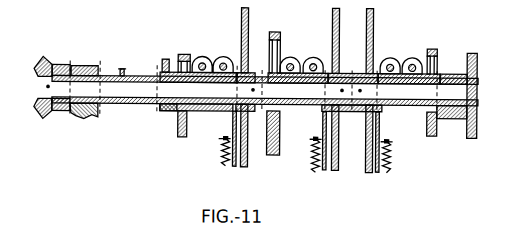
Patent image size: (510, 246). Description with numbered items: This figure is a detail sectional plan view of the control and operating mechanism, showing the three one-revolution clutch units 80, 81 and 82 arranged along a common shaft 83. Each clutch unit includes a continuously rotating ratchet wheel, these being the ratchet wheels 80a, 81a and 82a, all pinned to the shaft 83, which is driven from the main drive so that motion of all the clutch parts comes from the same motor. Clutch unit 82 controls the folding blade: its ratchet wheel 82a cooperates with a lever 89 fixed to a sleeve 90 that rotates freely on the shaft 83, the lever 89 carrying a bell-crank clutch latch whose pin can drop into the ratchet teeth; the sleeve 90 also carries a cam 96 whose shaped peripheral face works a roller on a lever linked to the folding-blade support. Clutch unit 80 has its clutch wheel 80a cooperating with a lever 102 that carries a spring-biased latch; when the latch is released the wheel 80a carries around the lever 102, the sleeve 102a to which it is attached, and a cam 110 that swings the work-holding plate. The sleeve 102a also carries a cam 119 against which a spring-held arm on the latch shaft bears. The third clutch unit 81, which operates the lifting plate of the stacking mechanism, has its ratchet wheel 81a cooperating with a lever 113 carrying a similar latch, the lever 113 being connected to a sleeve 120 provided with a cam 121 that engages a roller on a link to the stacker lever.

The shaft 83 is at (132, 90).
The cam 110 is at (179, 136).
The cam 119 is at (165, 58).
The sleeve 102a is at (191, 60).
The ratchet wheel 80a is at (242, 20).
The clutch unit 80 is at (238, 167).
The lever 102 is at (230, 124).
The cam 121 is at (275, 33).
The sleeve 120 is at (301, 62).
The ratchet wheel 81a is at (333, 24).
The clutch unit 81 is at (328, 170).
The lever 113 is at (313, 134).
The ratchet wheel 82a is at (373, 20).
The clutch unit 82 is at (375, 172).
The lever 89 is at (389, 143).
The sleeve 90 is at (400, 72).
The cam 96 is at (436, 50).